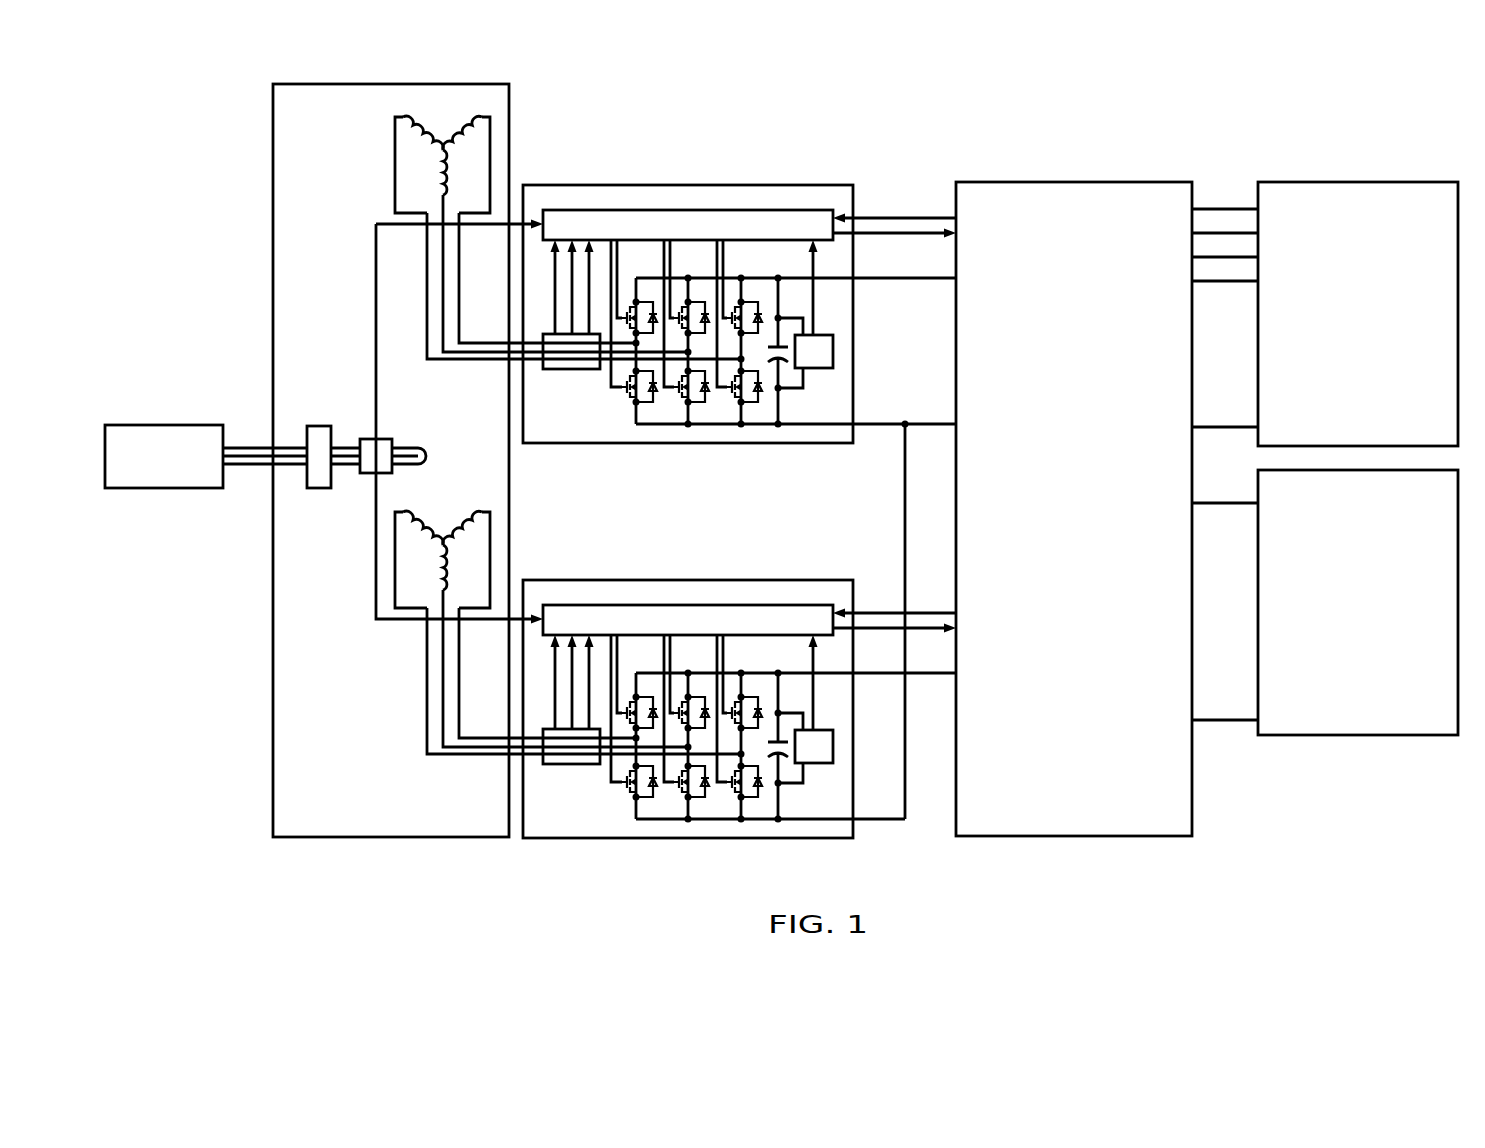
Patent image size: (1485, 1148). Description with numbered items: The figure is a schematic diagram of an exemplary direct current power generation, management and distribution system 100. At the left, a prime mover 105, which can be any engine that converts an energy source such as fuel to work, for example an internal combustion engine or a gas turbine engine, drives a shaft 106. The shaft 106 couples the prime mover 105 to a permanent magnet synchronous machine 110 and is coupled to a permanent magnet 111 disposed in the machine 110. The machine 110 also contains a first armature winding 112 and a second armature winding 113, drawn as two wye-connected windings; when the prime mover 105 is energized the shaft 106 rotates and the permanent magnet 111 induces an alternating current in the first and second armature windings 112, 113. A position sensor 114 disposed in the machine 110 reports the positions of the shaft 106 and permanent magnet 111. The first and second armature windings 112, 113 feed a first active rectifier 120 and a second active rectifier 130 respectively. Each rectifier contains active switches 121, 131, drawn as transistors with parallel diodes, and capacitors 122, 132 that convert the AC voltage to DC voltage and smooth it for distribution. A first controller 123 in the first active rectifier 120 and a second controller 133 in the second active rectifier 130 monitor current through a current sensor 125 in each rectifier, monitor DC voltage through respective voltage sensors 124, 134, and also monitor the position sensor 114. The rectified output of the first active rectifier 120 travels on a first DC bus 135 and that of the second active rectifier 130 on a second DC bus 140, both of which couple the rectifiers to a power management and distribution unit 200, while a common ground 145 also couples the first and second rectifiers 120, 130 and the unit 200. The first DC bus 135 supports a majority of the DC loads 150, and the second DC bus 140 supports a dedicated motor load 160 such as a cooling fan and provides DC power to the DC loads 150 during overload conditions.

The DC power generation, management and distribution system 100 is at (184, 130).
The prime mover 105 is at (162, 425).
The shaft 106 is at (254, 447).
The permanent magnet synchronous machine 110 is at (509, 123).
The permanent magnet 111 is at (319, 488).
The first armature winding 112 is at (395, 177).
The second armature winding 113 is at (395, 562).
The position sensor 114 is at (372, 439).
The first active rectifier 120 is at (623, 185).
The active switches 121 is at (623, 447).
The capacitor 122 is at (786, 360).
The first controller 123 is at (700, 210).
The voltage sensor 124 is at (833, 350).
The current sensor 125 is at (573, 369).
The second active rectifier 130 is at (688, 683).
The active switches 131 is at (732, 763).
The capacitor 132 is at (796, 746).
The second controller 133 is at (749, 592).
The voltage sensor 134 is at (838, 709).
The first DC bus 135 is at (573, 369).
The second DC bus 140 is at (904, 704).
The common ground 145 is at (922, 422).
The DC loads 150 is at (1363, 182).
The dedicated motor load 160 is at (1348, 742).
The power management and distribution unit 200 is at (1073, 182).